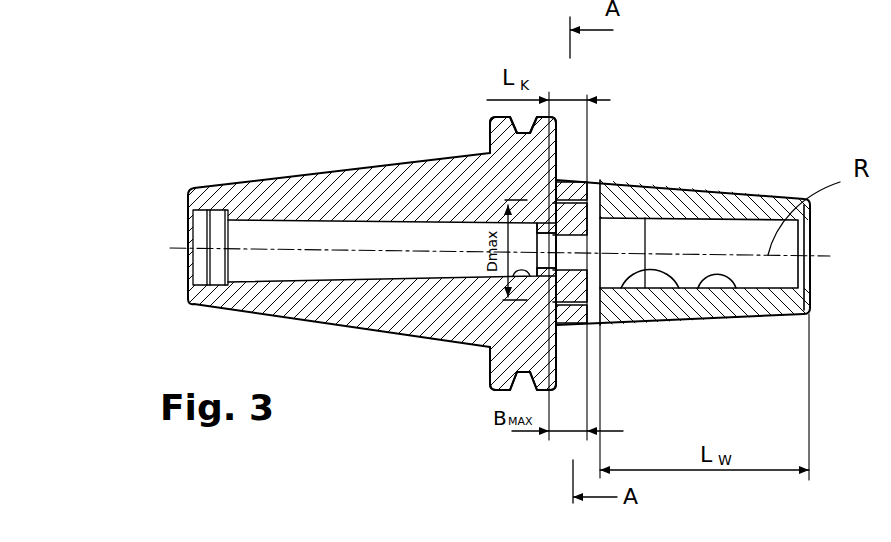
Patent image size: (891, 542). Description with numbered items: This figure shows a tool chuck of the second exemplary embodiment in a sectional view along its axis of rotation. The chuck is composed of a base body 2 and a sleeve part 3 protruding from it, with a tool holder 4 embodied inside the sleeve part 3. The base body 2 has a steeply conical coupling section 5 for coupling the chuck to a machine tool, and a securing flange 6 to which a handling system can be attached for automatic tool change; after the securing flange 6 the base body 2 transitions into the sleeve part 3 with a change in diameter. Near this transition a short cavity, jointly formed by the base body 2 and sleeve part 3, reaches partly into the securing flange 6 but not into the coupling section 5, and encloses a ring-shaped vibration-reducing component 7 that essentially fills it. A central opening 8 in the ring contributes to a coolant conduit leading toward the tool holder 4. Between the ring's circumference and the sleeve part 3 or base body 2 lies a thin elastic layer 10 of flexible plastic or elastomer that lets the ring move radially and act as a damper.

The base body 2 is at (323, 150).
The sleeve part 3 is at (710, 185).
The tool holder 4 is at (698, 290).
The coupling section 5 is at (292, 195).
The securing flange 6 is at (490, 150).
The vibration-reducing component 7 is at (622, 186).
The opening 8 is at (565, 258).
The elastic layer 10 is at (577, 221).